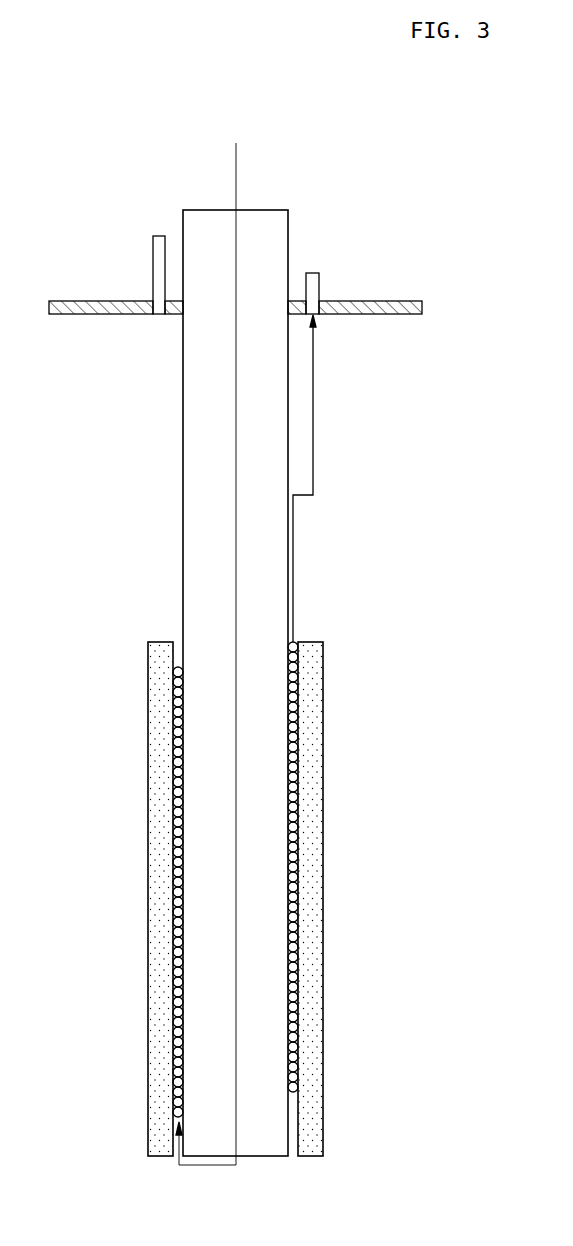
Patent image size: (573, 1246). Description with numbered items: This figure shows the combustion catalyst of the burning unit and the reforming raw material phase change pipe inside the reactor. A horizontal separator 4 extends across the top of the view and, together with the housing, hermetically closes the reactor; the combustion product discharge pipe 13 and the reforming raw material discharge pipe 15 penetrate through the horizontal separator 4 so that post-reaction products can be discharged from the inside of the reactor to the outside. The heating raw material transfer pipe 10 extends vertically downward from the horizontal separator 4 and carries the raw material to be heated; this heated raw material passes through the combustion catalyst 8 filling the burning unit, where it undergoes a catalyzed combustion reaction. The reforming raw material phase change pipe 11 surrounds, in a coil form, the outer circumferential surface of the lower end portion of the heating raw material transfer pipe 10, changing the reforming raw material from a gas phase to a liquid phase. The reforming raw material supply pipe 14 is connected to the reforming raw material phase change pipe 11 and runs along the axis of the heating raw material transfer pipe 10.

The horizontal separator 4 is at (405, 308).
The combustion catalyst 8 is at (160, 1033).
The heating raw material transfer pipe 10 is at (182, 489).
The reforming raw material phase change pipe 11 is at (298, 855).
The combustion product discharge pipe 13 is at (152, 263).
The reforming raw material supply pipe 14 is at (237, 168).
The reforming raw material discharge pipe 15 is at (310, 272).